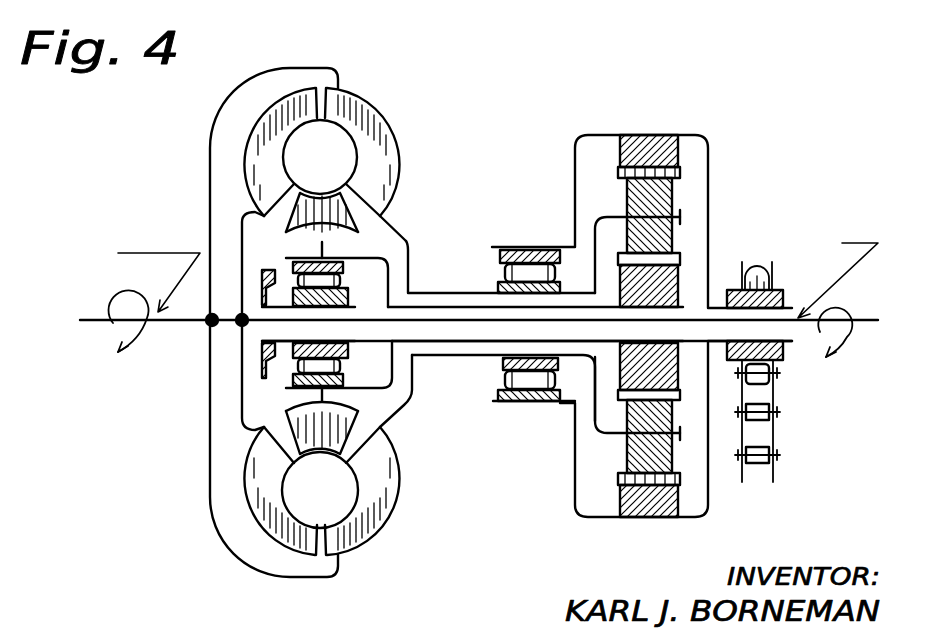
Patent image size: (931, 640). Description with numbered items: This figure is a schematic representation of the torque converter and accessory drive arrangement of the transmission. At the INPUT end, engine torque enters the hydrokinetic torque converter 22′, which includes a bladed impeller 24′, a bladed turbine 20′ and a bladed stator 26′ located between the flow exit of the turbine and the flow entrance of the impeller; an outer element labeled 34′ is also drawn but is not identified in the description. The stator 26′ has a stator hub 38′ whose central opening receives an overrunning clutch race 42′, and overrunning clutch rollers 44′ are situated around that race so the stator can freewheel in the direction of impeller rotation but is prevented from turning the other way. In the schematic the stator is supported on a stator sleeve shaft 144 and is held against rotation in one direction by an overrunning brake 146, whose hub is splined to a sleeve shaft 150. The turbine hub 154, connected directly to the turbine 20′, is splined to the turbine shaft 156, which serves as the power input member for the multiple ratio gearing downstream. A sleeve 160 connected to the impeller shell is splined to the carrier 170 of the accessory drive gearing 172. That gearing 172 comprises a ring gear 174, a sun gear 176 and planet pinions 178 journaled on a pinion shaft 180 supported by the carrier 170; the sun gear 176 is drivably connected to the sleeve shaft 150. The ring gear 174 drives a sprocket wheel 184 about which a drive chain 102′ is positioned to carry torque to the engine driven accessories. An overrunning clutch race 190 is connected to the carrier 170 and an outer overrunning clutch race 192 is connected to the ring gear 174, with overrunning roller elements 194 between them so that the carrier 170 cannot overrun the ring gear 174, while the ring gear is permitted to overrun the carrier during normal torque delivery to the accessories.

The bladed turbine 20′ is at (253, 160).
The hydrokinetic torque converter 22′ is at (417, 83).
The bladed impeller 24′ is at (382, 152).
The bladed stator 26′ is at (320, 193).
The housing 34′ is at (222, 145).
The stator hub 38′ is at (290, 380).
The overrunning clutch race 42′ is at (293, 362).
The overrunning clutch rollers 44′ is at (297, 283).
The drive chain 102′ is at (782, 433).
The stator sleeve shaft 144 is at (368, 268).
The overrunning brake 146 is at (358, 366).
The sleeve shaft 150 is at (430, 343).
The turbine hub 154 is at (242, 222).
The turbine shaft 156 is at (477, 360).
The sleeve 160 is at (423, 287).
The carrier 170 is at (585, 222).
The accessory drive gearing 172 is at (688, 127).
The ring gear 174 is at (627, 148).
The sun gear 176 is at (678, 272).
The planet pinions 178 is at (627, 192).
The pinion shaft 180 is at (683, 215).
The sprocket wheel 184 is at (787, 355).
The overrunning clutch race 190 is at (497, 285).
The outer overrunning clutch race 192 is at (542, 405).
The overrunning roller elements 194 is at (505, 405).
The input shaft INPUT is at (448, 294).